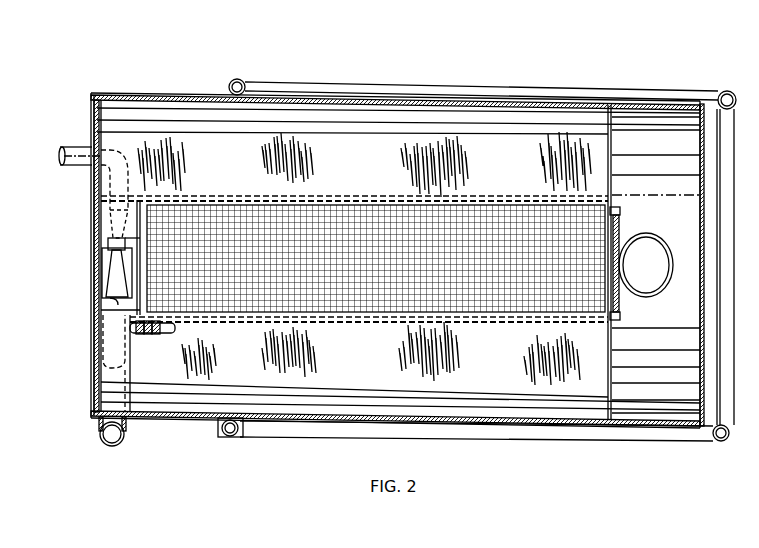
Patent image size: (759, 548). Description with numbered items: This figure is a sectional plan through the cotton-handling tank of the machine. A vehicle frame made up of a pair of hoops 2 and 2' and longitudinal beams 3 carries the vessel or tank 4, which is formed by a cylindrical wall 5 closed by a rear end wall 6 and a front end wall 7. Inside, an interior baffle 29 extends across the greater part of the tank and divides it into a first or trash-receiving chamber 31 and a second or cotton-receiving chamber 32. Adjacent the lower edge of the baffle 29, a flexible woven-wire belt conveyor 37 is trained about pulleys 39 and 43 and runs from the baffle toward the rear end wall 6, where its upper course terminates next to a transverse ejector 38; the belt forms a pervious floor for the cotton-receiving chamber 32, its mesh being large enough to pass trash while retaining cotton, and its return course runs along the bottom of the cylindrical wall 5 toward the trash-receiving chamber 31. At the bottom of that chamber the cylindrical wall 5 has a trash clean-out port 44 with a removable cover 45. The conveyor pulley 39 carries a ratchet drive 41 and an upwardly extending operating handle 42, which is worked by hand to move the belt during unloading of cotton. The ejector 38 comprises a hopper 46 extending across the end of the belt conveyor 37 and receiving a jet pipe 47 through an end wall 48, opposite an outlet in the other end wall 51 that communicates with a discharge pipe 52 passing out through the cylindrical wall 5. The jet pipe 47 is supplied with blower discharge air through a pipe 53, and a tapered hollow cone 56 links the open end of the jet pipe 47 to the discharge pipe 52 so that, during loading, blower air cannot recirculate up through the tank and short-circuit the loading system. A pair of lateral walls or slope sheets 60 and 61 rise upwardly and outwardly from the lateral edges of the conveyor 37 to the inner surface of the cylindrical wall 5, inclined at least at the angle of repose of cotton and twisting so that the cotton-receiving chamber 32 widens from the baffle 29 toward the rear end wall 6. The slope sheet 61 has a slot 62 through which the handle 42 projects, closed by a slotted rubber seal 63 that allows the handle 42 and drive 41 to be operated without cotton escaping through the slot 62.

The hoop 2 is at (237, 71).
The hoop 2' is at (727, 82).
The longitudinal beam 3 is at (474, 84).
The tank 4 is at (165, 421).
The cylindrical wall 5 is at (206, 420).
The rear end wall 6 is at (91, 370).
The front end wall 7 is at (704, 381).
The interior baffle 29 is at (607, 382).
The trash-receiving chamber 31 is at (656, 265).
The cotton-receiving chamber 32 is at (381, 353).
The belt conveyor 37 is at (355, 207).
The ejector 38 is at (127, 197).
The conveyor pulley 39 is at (160, 198).
The ratchet drive 41 is at (139, 334).
The operating handle 42 is at (151, 334).
The conveyor pulley 43 is at (616, 208).
The trash clean-out port 44 is at (638, 237).
The removable cover 45 is at (651, 255).
The hopper 46 is at (105, 268).
The jet pipe 47 is at (110, 252).
The end wall 48 is at (107, 238).
The end wall 51 is at (110, 298).
The discharge pipe 52 is at (102, 344).
The pipe 53 is at (73, 147).
The hollow cone 56 is at (108, 274).
The slope sheet 60 is at (137, 132).
The slope sheet 61 is at (151, 383).
The slot 62 is at (165, 334).
The slotted rubber seal 63 is at (176, 329).